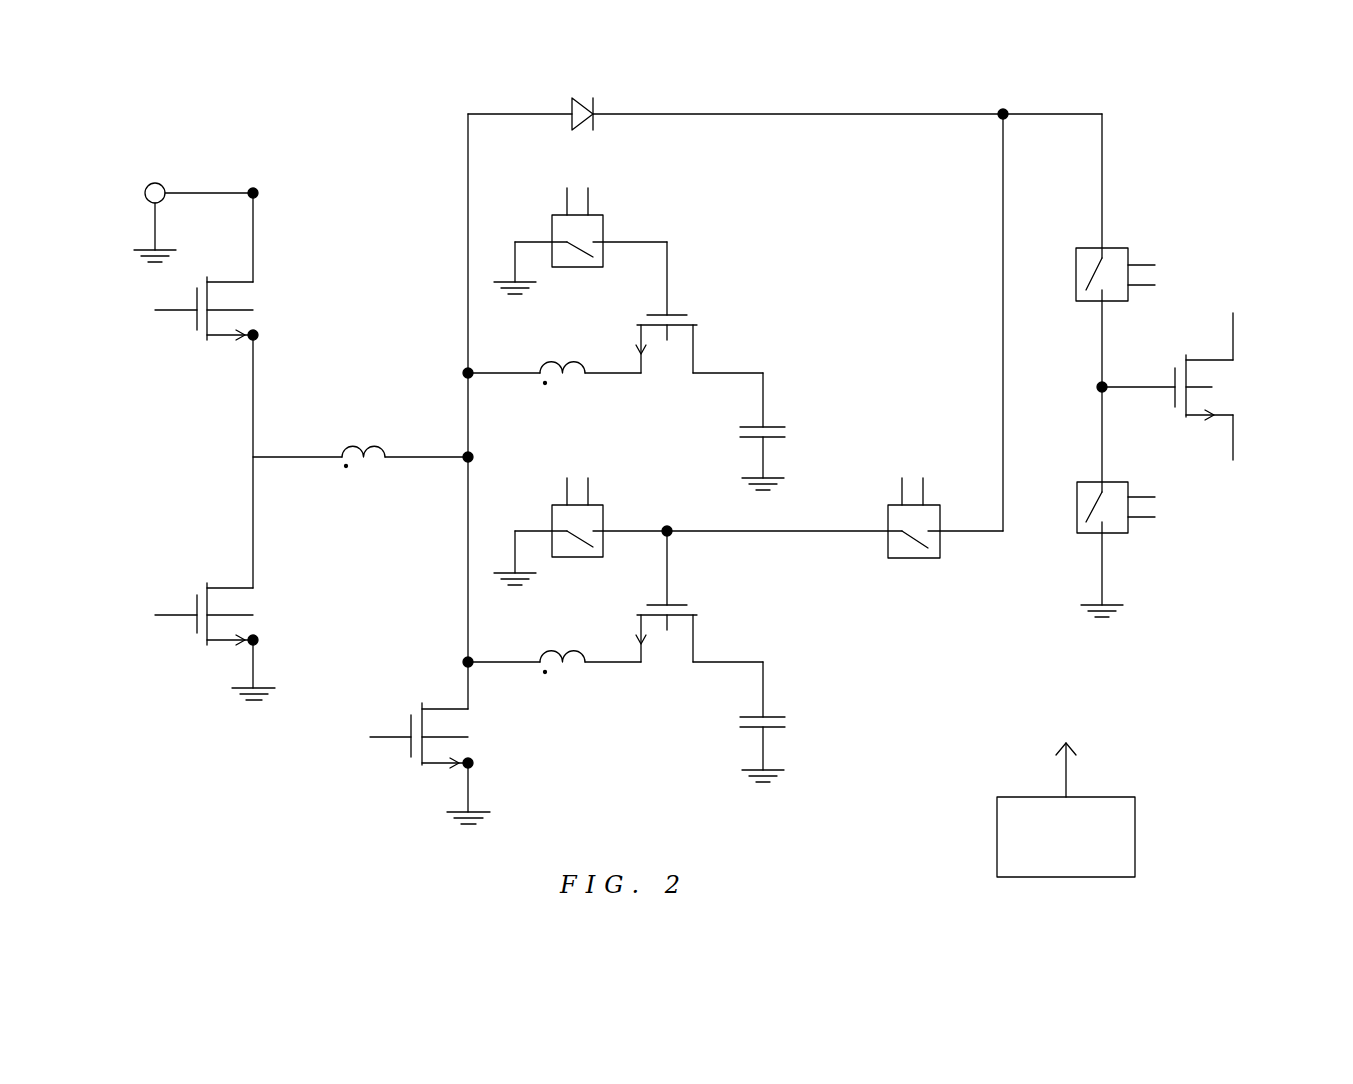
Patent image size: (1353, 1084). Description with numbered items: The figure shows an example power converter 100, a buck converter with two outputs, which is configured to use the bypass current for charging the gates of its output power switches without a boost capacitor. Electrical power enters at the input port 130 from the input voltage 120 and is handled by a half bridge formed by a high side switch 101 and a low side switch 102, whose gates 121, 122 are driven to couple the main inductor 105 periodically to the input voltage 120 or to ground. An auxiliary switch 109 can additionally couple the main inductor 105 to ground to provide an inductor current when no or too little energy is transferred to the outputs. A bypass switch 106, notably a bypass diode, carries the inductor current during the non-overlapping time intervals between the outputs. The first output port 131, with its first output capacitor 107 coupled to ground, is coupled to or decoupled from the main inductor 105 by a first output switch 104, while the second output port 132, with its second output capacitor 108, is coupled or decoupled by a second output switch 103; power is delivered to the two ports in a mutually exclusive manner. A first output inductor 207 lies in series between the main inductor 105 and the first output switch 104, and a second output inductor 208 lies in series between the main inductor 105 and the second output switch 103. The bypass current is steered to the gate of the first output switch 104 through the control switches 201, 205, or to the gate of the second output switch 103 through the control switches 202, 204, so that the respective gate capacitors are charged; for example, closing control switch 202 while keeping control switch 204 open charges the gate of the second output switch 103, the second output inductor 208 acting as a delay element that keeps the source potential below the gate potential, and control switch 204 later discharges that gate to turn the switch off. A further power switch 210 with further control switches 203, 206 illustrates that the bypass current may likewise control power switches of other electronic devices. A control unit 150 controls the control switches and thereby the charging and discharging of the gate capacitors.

The power converter 100 is at (310, 127).
The input voltage 120 is at (162, 185).
The input port 130 is at (262, 194).
The high side switch 101 is at (243, 300).
The low side switch 102 is at (243, 607).
The gate of the high side switch 121 is at (163, 320).
The gate of the low side switch 122 is at (163, 627).
The main inductor 105 is at (365, 440).
The bypass switch 106 is at (598, 122).
The control switch 205 is at (588, 272).
The control switch 201 is at (841, 495).
The first output inductor 207 is at (568, 384).
The first output switch 104 is at (662, 352).
The first output port 131 is at (766, 373).
The first output capacitor 107 is at (786, 432).
The control switch 203 is at (1148, 273).
The power switch 210 is at (1228, 386).
The control switch 206 is at (1150, 505).
The control switch 204 is at (588, 562).
The control switch 202 is at (923, 565).
The second output inductor 208 is at (565, 675).
The second output switch 103 is at (662, 642).
The second output port 132 is at (766, 662).
The second output capacitor 108 is at (786, 722).
The auxiliary switch 109 is at (458, 723).
The control unit 150 is at (1135, 812).